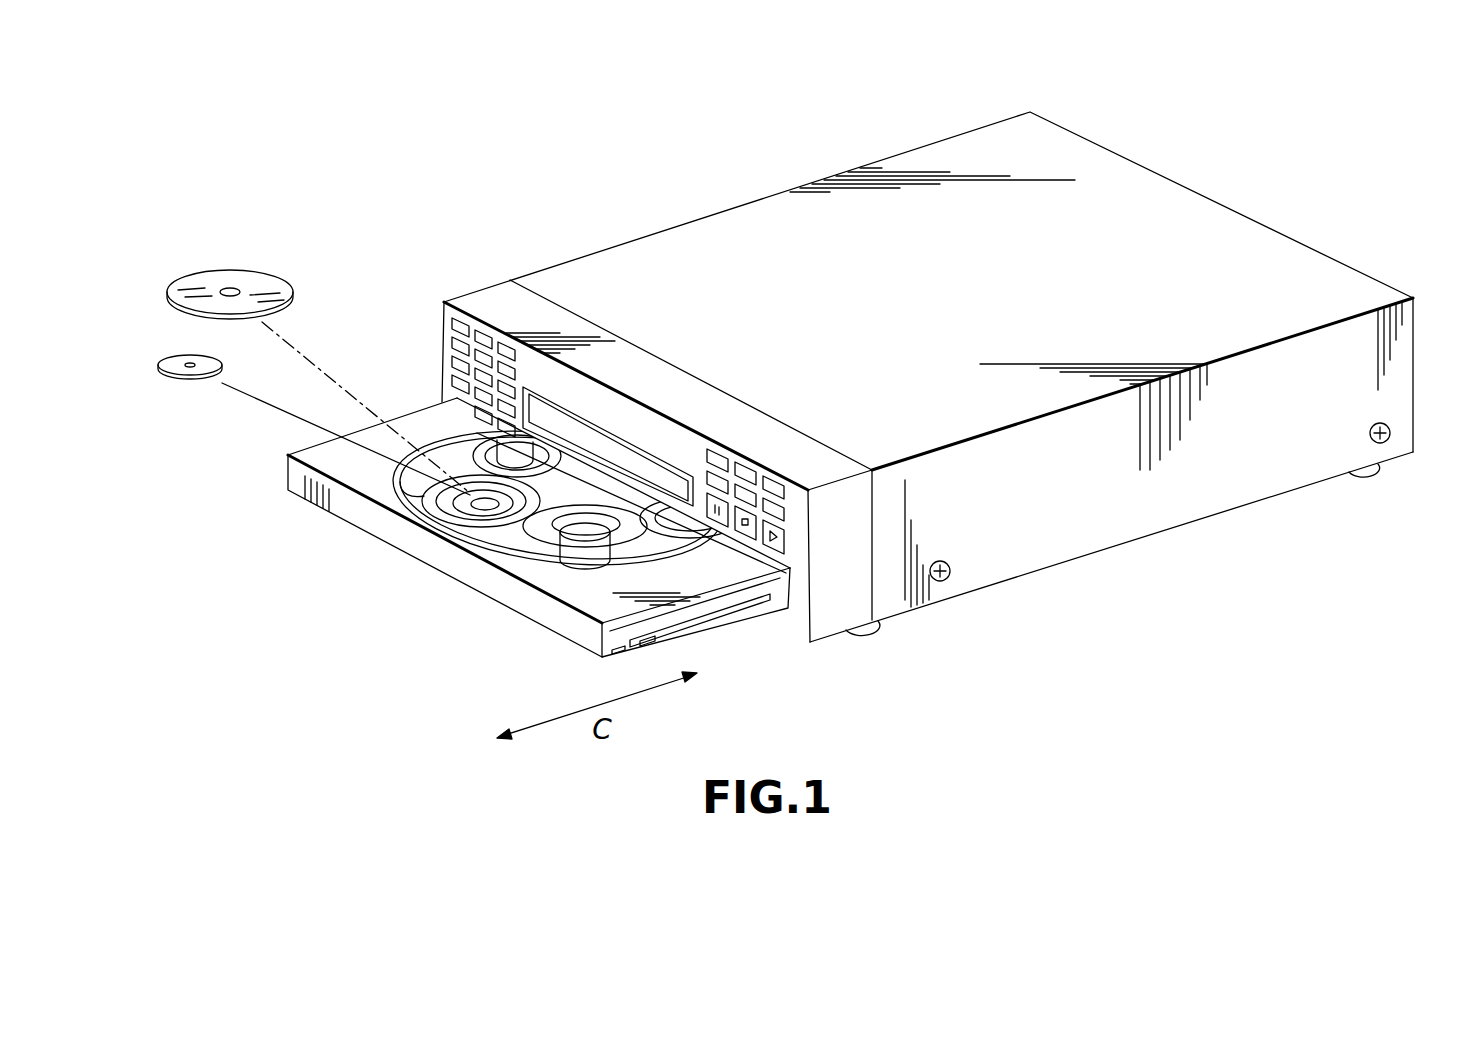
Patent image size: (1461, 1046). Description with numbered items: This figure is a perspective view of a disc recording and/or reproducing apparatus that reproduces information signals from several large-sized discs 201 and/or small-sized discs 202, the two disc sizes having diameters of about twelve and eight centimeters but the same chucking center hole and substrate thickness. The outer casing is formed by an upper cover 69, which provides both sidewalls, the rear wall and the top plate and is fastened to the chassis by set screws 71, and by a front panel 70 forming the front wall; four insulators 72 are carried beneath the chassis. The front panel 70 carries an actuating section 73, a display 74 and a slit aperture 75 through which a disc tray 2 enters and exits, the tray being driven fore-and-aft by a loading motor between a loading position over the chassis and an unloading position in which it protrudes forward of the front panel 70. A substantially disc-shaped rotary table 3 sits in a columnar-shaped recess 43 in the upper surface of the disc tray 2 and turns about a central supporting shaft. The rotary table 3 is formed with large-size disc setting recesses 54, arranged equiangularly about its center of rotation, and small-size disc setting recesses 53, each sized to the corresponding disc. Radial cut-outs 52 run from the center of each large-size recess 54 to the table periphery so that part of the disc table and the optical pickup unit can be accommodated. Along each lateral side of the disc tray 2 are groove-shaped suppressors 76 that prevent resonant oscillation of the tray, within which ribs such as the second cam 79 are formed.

The disc tray 2 is at (513, 590).
The rotary table 3 is at (446, 420).
The recess 43 is at (440, 487).
The cut-outs 52 is at (450, 520).
The small-size disc setting recesses 53 is at (490, 525).
The large-size disc setting recesses 54 is at (545, 550).
The upper cover 69 is at (745, 213).
The front panel 70 is at (495, 297).
The set screws 71 is at (952, 576).
The insulators 72 is at (872, 628).
The actuating section 73 is at (692, 448).
The display 74 is at (620, 447).
The slit aperture 75 is at (773, 607).
The suppressors 76 is at (745, 617).
The second cam 79 is at (655, 638).
The large-sized disc 201 is at (260, 278).
The small-sized disc 202 is at (172, 357).